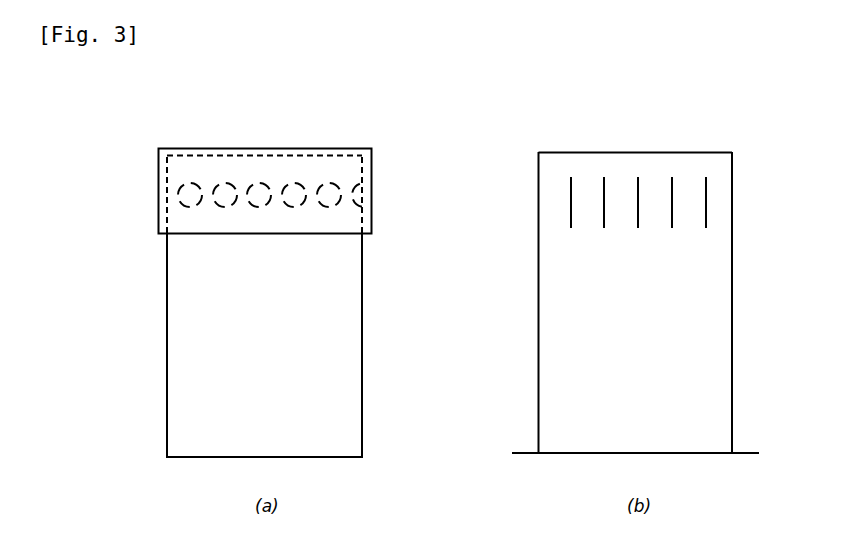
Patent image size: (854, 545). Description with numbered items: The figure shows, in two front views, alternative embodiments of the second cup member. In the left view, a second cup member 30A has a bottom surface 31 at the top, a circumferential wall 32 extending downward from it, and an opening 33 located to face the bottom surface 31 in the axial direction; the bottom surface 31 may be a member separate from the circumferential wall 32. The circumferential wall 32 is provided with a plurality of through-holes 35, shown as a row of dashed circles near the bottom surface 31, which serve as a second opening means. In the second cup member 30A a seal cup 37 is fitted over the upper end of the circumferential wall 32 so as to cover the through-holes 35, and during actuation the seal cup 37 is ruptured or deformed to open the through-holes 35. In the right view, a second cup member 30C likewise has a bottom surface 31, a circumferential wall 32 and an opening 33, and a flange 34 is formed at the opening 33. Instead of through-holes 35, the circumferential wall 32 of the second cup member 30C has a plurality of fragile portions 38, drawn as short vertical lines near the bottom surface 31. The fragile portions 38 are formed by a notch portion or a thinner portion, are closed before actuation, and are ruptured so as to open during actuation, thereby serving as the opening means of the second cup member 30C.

The second cup member 30A is at (314, 128).
The second cup member 30C is at (681, 136).
The bottom surface 31 is at (244, 154).
The circumferential wall 32 is at (183, 316).
The opening 33 is at (305, 458).
The flange 34 is at (523, 450).
The through-holes 35 is at (222, 195).
The seal cup 37 is at (355, 148).
The fragile portions 38 is at (707, 198).